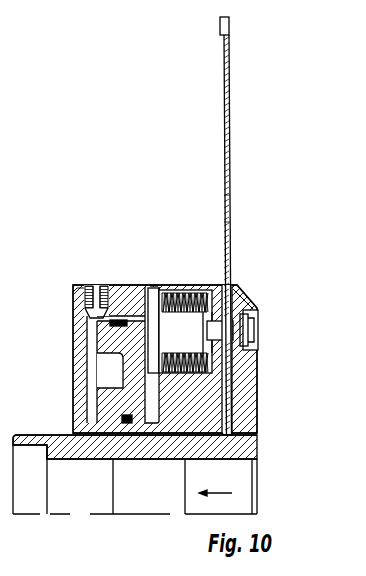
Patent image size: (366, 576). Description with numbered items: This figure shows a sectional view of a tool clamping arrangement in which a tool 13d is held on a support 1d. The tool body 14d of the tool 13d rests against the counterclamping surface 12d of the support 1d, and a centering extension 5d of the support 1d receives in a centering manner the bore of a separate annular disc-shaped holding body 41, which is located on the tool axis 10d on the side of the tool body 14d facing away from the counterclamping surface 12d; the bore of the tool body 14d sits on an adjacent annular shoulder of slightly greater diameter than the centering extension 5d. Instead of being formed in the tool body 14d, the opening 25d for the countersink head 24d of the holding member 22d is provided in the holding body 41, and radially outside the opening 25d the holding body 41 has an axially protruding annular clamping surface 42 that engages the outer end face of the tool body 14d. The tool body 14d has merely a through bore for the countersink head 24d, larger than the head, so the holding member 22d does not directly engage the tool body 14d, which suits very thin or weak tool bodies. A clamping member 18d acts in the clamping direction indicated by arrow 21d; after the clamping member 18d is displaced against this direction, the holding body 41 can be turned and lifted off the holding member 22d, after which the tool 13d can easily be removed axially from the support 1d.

The support 1d is at (120, 275).
The centering extension 5d is at (250, 446).
The tool axis 10d is at (266, 514).
The counterclamping surface 12d is at (232, 384).
The tool 13d is at (232, 108).
The tool body 14d is at (229, 208).
The clamping member 18d is at (170, 288).
The clamping direction arrow 21d is at (217, 483).
The holding member 22d is at (207, 331).
The countersink head 24d is at (249, 340).
The opening 25d is at (248, 318).
The holding body 41 is at (245, 408).
The clamping surface 42 is at (218, 288).